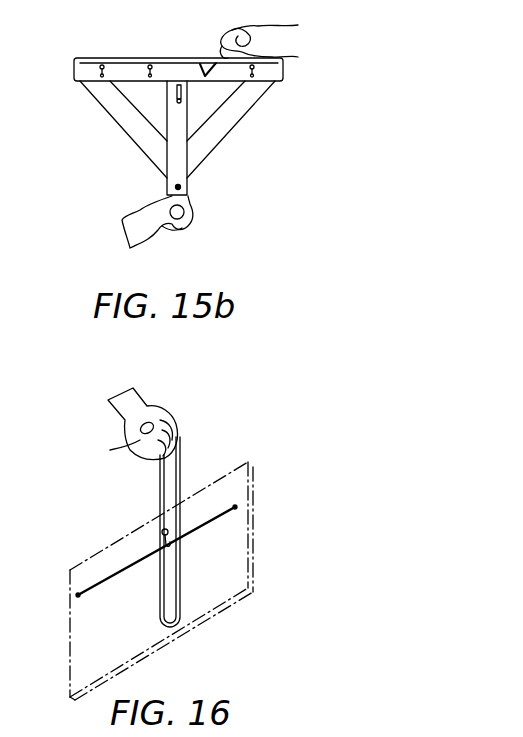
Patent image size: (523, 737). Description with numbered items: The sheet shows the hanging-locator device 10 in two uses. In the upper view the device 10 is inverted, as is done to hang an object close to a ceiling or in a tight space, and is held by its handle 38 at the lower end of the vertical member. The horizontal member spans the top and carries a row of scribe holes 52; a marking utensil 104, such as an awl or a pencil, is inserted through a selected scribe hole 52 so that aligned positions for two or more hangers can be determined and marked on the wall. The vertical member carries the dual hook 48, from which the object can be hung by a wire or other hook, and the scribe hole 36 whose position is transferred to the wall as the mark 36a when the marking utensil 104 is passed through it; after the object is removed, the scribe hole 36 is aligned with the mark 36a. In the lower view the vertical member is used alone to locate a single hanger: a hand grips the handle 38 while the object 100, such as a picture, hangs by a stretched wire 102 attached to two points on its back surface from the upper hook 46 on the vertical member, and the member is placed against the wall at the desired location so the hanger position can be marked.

In FIG. 15B, the device 10 is at (92, 104).
In FIG. 16, the device 10 is at (190, 597).
In FIG. 15B, the scribe hole 36 is at (189, 176).
In FIG. 15B, the mark 36a is at (176, 187).
In FIG. 15B, the handle 38 is at (184, 211).
In FIG. 16, the handle 38 is at (135, 437).
In FIG. 16, the upper hook 46 is at (165, 543).
In FIG. 15B, the dual hook 48 is at (182, 90).
In FIG. 15B, the scribe holes 52 is at (204, 72).
In FIG. 16, the object 100 is at (232, 470).
In FIG. 16, the stretched wire 102 is at (203, 517).
In FIG. 15B, the marking utensil 104 is at (207, 74).